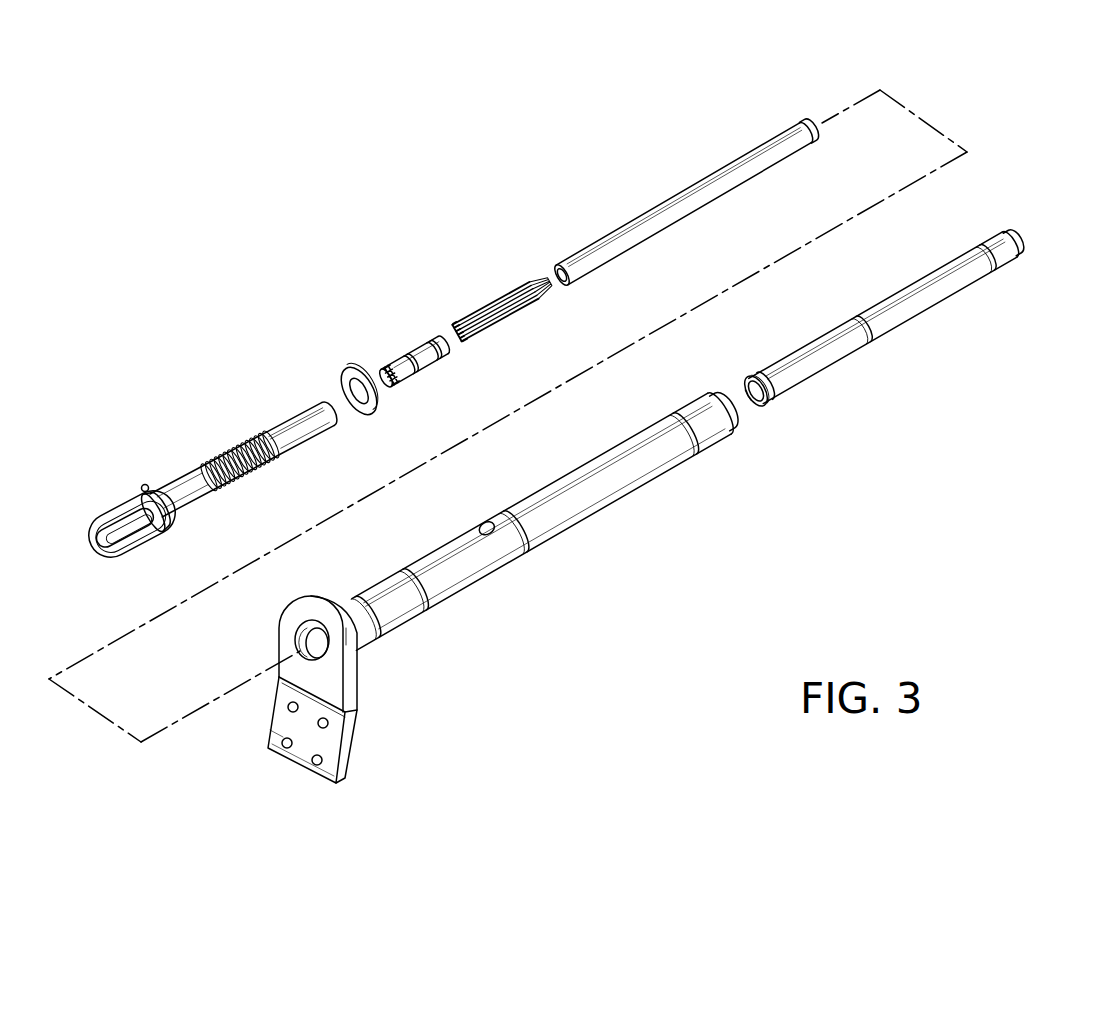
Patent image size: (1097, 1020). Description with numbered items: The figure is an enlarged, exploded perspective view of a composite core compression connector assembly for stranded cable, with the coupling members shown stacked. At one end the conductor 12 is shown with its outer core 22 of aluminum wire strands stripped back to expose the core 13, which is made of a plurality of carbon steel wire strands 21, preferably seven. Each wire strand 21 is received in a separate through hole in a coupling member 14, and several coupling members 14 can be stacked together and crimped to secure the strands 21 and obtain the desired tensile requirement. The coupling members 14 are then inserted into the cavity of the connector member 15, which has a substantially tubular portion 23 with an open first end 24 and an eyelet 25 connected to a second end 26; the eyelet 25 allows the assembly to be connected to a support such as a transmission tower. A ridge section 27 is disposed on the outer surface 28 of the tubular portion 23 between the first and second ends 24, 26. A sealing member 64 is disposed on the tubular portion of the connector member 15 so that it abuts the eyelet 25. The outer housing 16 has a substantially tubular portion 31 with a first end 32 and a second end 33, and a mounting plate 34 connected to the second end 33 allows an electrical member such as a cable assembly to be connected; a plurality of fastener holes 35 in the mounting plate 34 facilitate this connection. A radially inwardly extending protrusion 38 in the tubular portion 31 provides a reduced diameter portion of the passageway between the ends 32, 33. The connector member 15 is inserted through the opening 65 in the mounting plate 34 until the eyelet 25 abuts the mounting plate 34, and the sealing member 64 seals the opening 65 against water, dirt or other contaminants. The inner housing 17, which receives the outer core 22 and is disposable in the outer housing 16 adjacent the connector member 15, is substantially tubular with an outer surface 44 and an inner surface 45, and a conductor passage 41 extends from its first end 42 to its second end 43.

The conductor 12 is at (666, 167).
The core 13 is at (492, 300).
The coupling member 14 is at (410, 348).
The connector member 15 is at (233, 427).
The outer housing 16 is at (548, 518).
The inner housing 17 is at (893, 315).
The wire strands 21 is at (456, 324).
The outer core 22 is at (661, 204).
The tubular portion 23 is at (286, 418).
The first end 24 is at (327, 398).
The eyelet 25 is at (116, 500).
The second end 26 is at (146, 485).
The ridge section 27 is at (228, 448).
The outer surface 28 is at (301, 448).
The tubular portion 31 is at (482, 578).
The first end 32 is at (732, 425).
The second end 33 is at (367, 646).
The mounting plate 34 is at (306, 706).
The fastener holes 35 is at (284, 746).
The protrusion 38 is at (487, 521).
The conductor passage 41 is at (744, 387).
The first end 42 is at (1021, 233).
The second end 43 is at (758, 406).
The outer surface 44 is at (939, 305).
The inner surface 45 is at (758, 376).
The sealing member 64 is at (352, 367).
The opening 65 is at (297, 644).